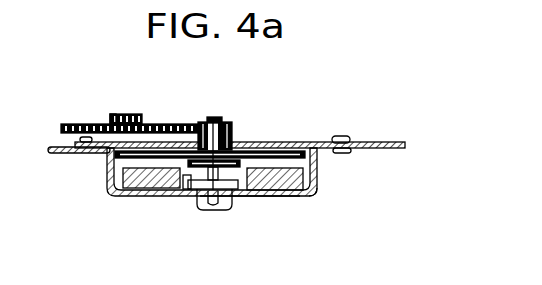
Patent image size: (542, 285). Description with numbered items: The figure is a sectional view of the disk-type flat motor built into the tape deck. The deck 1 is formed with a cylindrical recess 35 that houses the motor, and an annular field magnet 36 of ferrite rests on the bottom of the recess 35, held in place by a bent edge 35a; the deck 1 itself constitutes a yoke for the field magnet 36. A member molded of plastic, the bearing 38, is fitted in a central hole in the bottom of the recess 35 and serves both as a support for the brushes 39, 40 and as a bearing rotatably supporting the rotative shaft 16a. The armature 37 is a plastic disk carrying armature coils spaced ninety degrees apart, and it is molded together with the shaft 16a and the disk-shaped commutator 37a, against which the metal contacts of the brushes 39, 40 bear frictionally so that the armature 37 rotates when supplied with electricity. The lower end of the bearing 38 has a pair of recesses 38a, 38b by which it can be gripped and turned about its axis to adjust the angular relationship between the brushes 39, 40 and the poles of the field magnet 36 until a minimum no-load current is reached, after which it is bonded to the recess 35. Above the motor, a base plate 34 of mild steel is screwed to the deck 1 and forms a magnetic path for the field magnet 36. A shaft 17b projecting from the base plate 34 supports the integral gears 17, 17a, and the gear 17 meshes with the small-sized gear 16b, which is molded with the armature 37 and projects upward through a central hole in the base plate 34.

The deck 1 is at (376, 142).
The rotative shaft 16a is at (212, 117).
The small-sized gear 16b is at (230, 122).
The gear 17 is at (168, 124).
The gear 17a is at (136, 114).
The shaft 17b is at (128, 113).
The base plate 34 is at (306, 140).
The cylindrical recess 35 is at (292, 196).
The bent edge 35a is at (318, 196).
The annular field magnet 36 is at (135, 196).
The armature 37 is at (106, 162).
The commutator 37a is at (238, 160).
The bearing 38 is at (243, 190).
The recess 38a is at (205, 210).
The recess 38b is at (235, 208).
The brush 39 is at (176, 189).
The brush 40 is at (196, 197).